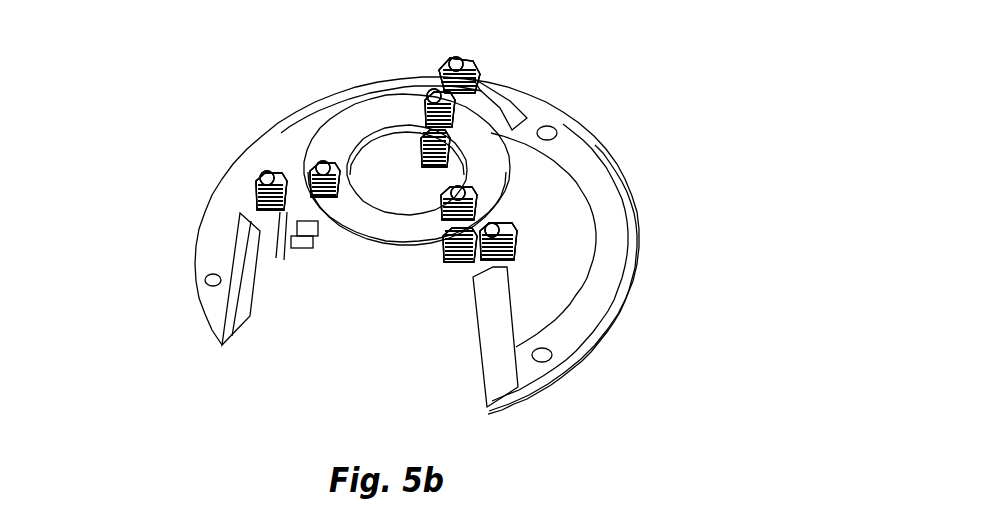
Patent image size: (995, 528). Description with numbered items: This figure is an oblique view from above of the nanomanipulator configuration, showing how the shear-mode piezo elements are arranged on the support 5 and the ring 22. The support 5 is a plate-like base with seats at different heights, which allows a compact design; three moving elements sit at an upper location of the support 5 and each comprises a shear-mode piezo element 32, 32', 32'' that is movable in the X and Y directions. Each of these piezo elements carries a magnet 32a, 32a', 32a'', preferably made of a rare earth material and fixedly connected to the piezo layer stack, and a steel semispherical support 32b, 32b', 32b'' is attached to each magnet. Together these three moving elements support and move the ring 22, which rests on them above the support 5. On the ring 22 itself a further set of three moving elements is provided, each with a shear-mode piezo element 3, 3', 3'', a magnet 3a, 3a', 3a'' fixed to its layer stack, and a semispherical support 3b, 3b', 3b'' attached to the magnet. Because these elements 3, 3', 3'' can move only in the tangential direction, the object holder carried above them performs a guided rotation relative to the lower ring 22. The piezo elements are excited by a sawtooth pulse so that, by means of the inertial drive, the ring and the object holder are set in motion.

The support 5 is at (468, 245).
The ring 22 is at (407, 222).
The shear-mode piezo element 32 is at (340, 65).
The magnet 32a is at (340, 65).
The semispherical support 32b is at (340, 65).
The shear-mode piezo element 3 is at (564, 109).
The magnet 3a is at (564, 109).
The semispherical support 3b is at (564, 109).
The shear-mode piezo element 3' is at (222, 151).
The magnet 3a' is at (222, 151).
The semispherical support 3b' is at (222, 151).
The shear-mode piezo element 3'' is at (633, 180).
The magnet 3a'' is at (633, 180).
The semispherical support 3b'' is at (633, 180).
The shear-mode piezo element 32' is at (162, 217).
The magnet 32a' is at (162, 217).
The semispherical support 32b' is at (162, 217).
The shear-mode piezo element 32'' is at (644, 242).
The magnet 32a'' is at (644, 242).
The semispherical support 32b'' is at (644, 242).